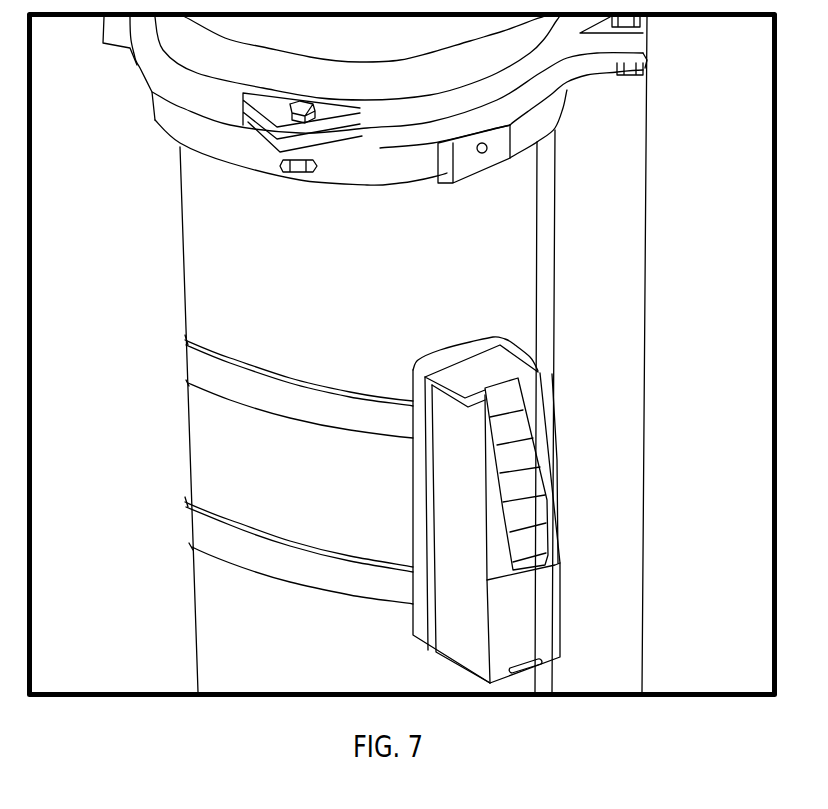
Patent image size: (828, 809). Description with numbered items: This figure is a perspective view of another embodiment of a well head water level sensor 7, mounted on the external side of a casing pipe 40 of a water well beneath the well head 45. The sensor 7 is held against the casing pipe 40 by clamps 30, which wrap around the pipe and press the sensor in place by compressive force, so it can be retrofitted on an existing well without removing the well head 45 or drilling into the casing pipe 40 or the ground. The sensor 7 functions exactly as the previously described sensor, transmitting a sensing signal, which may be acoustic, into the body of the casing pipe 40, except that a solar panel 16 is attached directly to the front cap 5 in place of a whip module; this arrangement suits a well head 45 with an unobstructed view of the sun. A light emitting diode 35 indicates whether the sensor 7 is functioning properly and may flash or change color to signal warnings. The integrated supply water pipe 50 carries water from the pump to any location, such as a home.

The front cap 5 is at (520, 493).
The well head water level sensor 7 is at (520, 458).
The solar panel 16 is at (517, 405).
The clamps 30 is at (267, 570).
The light emitting diode 35 is at (553, 658).
The casing pipe 40 is at (207, 277).
The well head 45 is at (550, 67).
The supply water pipe 50 is at (628, 428).